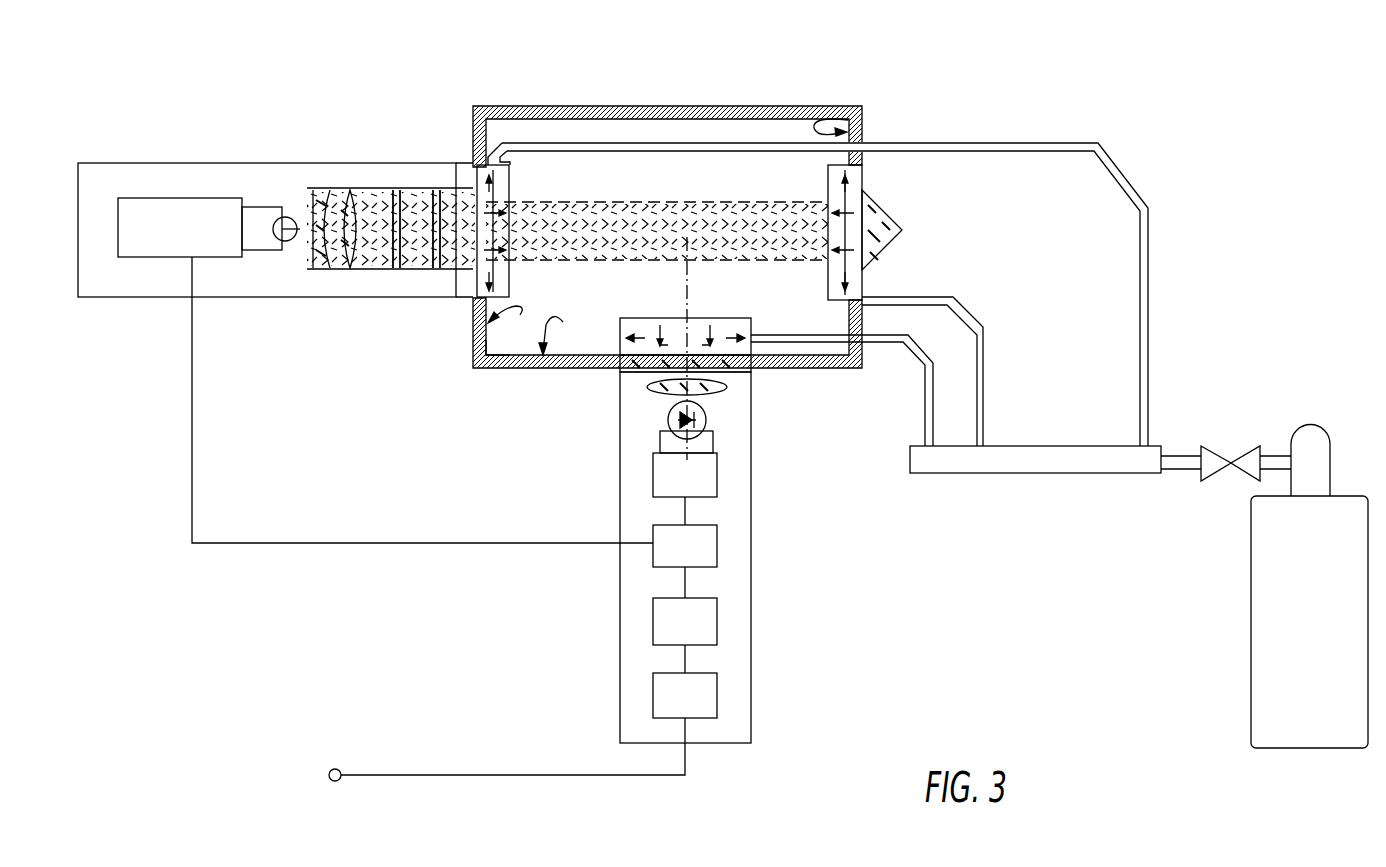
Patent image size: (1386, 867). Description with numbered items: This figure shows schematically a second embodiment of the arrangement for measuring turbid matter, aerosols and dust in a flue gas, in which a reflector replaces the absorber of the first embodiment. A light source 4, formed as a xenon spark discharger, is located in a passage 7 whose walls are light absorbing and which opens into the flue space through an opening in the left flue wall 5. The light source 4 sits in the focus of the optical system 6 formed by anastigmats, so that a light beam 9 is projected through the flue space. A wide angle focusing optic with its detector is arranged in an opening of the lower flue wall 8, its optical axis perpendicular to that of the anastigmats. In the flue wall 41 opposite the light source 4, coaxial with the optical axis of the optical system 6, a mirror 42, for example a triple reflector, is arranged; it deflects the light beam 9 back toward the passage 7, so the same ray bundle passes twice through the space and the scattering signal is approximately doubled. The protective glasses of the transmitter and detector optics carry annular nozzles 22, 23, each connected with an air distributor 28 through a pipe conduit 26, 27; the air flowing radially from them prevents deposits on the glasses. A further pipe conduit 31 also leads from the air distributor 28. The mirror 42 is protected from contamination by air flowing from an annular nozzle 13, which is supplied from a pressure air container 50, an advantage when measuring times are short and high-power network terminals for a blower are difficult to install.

The light source 4 is at (293, 212).
The left flue wall 5 is at (472, 355).
The optical system 6 is at (343, 187).
The passage 7 is at (420, 187).
The lower flue wall 8 is at (520, 315).
The light beam 9 is at (650, 222).
The annular nozzle 13 is at (837, 193).
The annular nozzle 22 is at (500, 187).
The annular nozzle 23 is at (643, 327).
The pipe conduit 26 is at (1133, 190).
The pipe conduit 27 is at (928, 380).
The air distributor 28 is at (1145, 462).
The further pipe conduit 31 is at (968, 312).
The flue wall 41 is at (853, 110).
The mirror 42 is at (887, 223).
The pressure air container 50 is at (1312, 674).